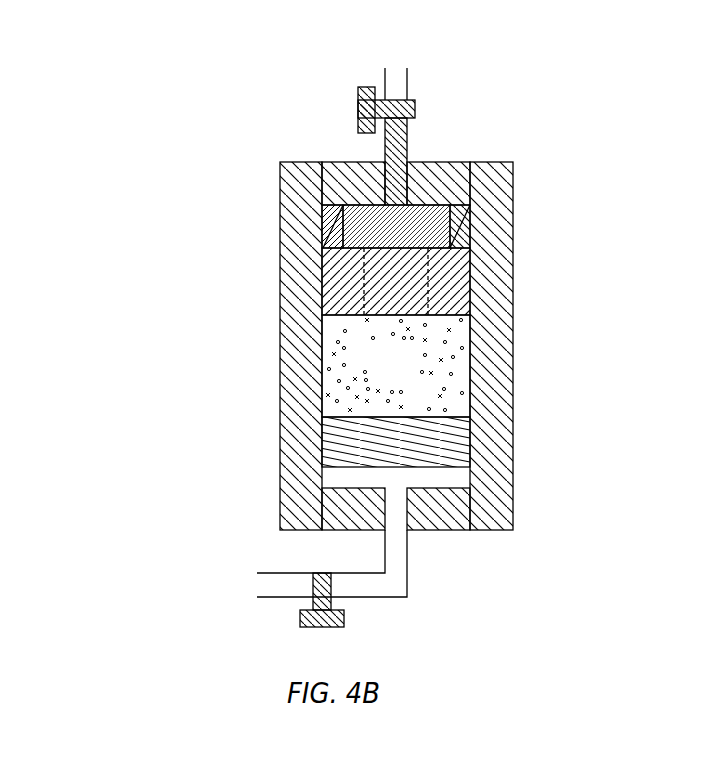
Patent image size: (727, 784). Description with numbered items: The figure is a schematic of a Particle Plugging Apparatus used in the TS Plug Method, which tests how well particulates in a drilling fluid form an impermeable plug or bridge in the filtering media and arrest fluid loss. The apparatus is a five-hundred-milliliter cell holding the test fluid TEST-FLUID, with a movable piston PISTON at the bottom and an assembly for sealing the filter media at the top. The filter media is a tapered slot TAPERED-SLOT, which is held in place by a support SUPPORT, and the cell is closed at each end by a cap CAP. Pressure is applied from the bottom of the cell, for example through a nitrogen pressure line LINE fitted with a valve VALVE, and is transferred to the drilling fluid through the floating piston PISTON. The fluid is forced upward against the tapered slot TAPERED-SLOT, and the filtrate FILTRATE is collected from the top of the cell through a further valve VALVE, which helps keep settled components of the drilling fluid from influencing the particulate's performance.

The cap CAP is at (333, 173).
The nitrogen pressure line LINE is at (383, 80).
The filtrate FILTRATE is at (396, 82).
The valve VALVE is at (357, 110).
The support SUPPORT is at (332, 224).
The tapered slot TAPERED-SLOT is at (348, 295).
The fluid with particulates to be tested TEST-FLUID is at (396, 366).
The movable piston PISTON is at (333, 448).